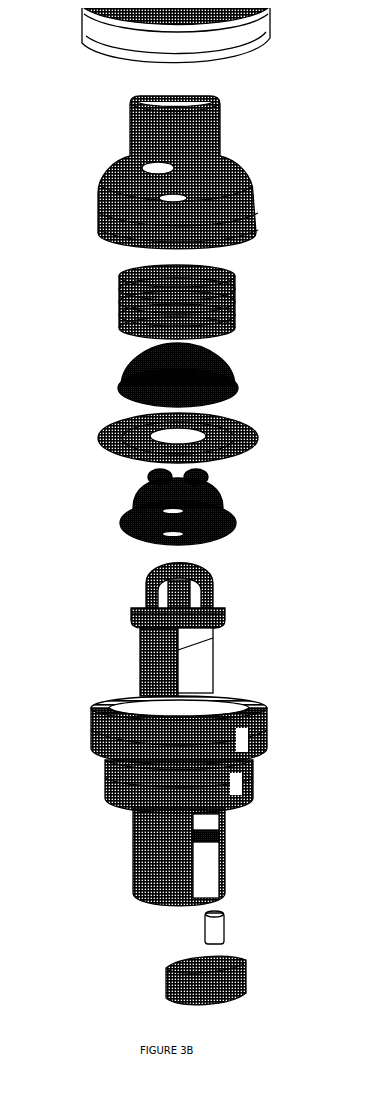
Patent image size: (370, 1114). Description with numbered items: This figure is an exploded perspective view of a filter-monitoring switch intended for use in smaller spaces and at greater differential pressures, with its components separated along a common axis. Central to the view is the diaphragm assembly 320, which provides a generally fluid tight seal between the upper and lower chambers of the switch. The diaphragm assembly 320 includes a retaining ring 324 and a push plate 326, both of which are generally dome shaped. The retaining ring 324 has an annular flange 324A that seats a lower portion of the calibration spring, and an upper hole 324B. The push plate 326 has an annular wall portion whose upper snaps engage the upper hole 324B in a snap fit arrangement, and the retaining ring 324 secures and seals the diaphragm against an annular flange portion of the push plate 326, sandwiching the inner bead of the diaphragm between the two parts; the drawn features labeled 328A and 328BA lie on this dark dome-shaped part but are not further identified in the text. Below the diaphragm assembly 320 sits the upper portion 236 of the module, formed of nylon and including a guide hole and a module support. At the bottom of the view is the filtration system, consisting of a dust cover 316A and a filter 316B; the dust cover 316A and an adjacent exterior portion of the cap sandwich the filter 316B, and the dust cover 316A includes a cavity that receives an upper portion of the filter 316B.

The diaphragm assembly 320 is at (85, 342).
The retaining ring 324 is at (203, 354).
The annular flange 324A is at (122, 374).
The upper hole 324B is at (115, 306).
The push plate 326 is at (220, 494).
The valve base 328A is at (118, 522).
The valve tabs 328BA is at (141, 465).
The upper portion 236 is at (200, 550).
The dust cover 316A is at (188, 960).
The filter 316B is at (205, 925).